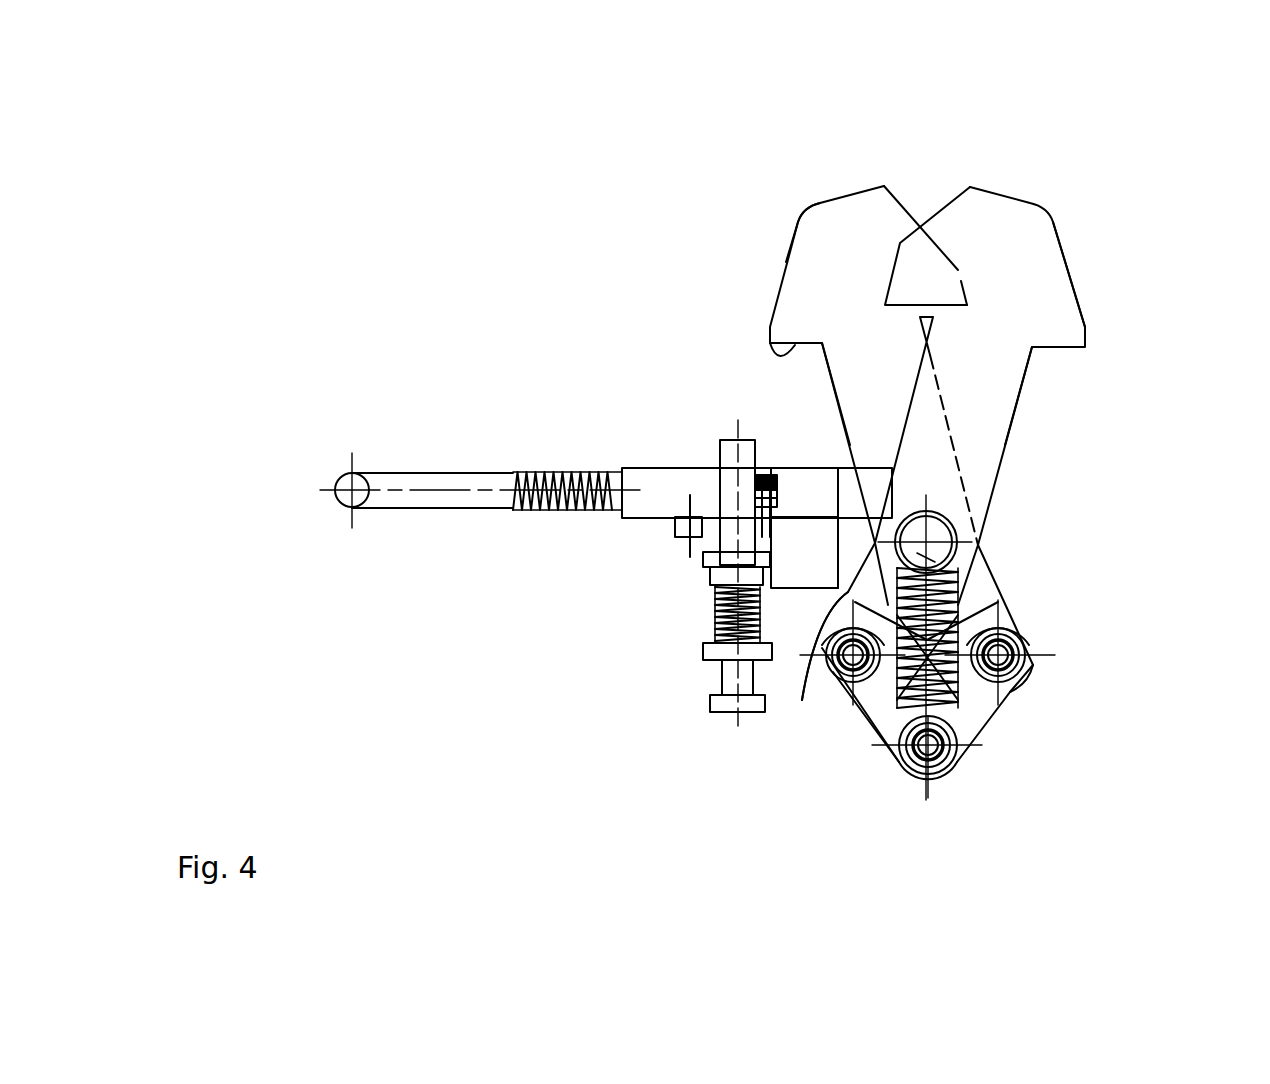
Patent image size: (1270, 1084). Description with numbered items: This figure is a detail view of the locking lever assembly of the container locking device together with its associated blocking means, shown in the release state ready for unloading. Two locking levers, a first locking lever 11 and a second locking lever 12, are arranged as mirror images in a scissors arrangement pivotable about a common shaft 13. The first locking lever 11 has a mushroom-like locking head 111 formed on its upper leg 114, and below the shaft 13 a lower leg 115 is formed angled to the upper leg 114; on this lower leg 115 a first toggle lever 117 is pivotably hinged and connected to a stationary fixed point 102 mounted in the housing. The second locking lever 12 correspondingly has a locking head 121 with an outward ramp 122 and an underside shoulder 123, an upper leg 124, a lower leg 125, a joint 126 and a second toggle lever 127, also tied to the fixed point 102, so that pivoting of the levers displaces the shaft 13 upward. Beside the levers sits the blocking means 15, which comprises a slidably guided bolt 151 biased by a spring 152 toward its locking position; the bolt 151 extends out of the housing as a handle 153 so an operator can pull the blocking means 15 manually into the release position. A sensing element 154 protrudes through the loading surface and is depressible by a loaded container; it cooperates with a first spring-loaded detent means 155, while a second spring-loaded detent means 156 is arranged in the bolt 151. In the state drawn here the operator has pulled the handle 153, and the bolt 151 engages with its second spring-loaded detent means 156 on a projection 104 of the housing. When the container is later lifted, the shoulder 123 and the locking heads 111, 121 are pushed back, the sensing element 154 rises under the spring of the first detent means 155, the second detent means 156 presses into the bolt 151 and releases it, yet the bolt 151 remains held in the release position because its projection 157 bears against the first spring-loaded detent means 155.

The first locking lever 11 is at (1001, 191).
The second locking lever 12 is at (848, 191).
The shaft 13 is at (972, 567).
The blocking means 15 is at (500, 401).
The fixed point 102 is at (928, 785).
The projection 104 is at (803, 552).
The locking head 111 is at (1020, 275).
The upper leg 114 is at (988, 387).
The lower leg 115 is at (802, 700).
The first toggle lever 117 is at (880, 708).
The locking head 121 is at (852, 248).
The ramp 122 is at (790, 258).
The shoulder 123 is at (773, 352).
The upper leg 124 is at (868, 375).
The lower leg 125 is at (983, 595).
The joint 126 is at (1027, 640).
The second toggle lever 127 is at (975, 702).
The bolt 151 is at (853, 467).
The spring 152 is at (570, 472).
The handle 153 is at (346, 484).
The sensing element 154 is at (723, 443).
The first spring-loaded detent means 155 is at (703, 589).
The second spring-loaded detent means 156 is at (765, 467).
The projection 157 is at (677, 527).